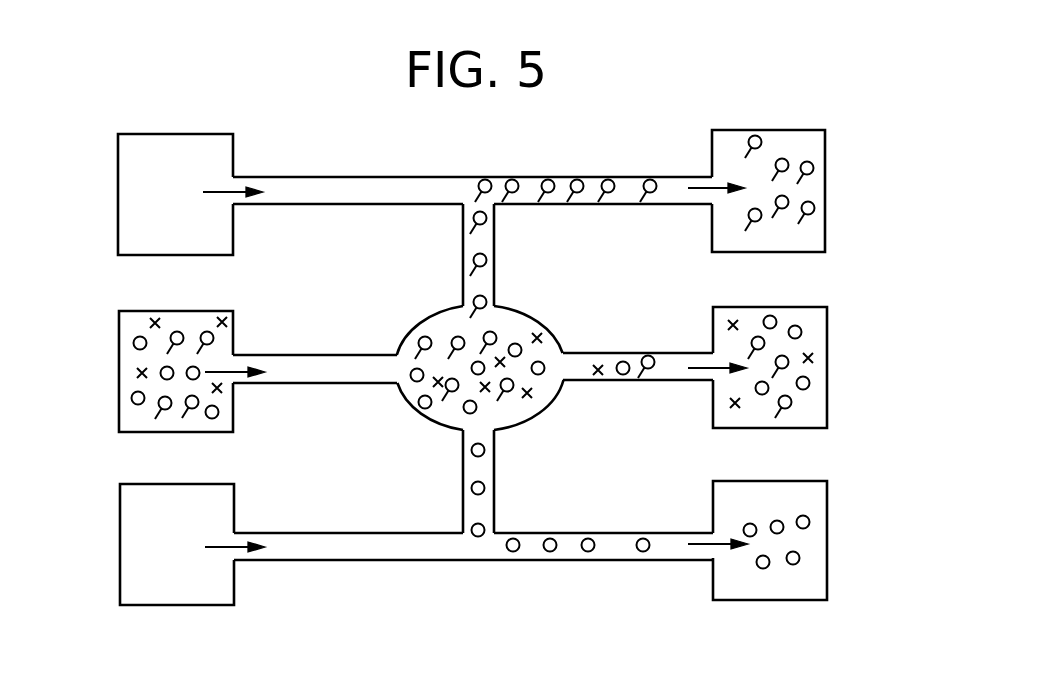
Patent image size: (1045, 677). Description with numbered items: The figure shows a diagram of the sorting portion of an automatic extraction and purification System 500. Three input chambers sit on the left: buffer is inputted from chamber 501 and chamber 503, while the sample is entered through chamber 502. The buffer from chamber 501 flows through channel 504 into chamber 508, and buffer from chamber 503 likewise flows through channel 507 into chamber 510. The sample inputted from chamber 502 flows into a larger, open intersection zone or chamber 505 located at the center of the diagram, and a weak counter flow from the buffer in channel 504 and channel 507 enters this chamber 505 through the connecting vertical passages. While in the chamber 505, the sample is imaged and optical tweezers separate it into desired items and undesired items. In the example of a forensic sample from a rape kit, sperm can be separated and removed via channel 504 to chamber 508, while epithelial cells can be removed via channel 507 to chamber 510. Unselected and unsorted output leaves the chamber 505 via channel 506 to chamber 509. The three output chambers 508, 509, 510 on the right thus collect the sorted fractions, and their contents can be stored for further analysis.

The automatic extraction and purification system 500 is at (848, 133).
The buffer chamber 501 is at (118, 178).
The sample chamber 502 is at (119, 370).
The buffer chamber 503 is at (120, 545).
The channel 504 is at (383, 177).
The intersection zone or chamber 505 is at (520, 307).
The channel 506 is at (633, 383).
The channel 507 is at (515, 562).
The output chamber 508 is at (825, 185).
The output chamber 509 is at (827, 368).
The output chamber 510 is at (827, 544).